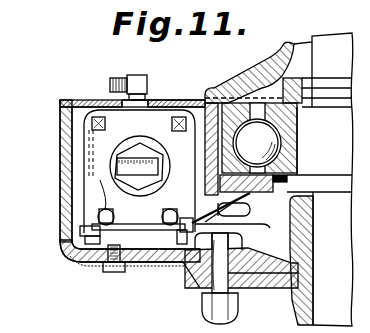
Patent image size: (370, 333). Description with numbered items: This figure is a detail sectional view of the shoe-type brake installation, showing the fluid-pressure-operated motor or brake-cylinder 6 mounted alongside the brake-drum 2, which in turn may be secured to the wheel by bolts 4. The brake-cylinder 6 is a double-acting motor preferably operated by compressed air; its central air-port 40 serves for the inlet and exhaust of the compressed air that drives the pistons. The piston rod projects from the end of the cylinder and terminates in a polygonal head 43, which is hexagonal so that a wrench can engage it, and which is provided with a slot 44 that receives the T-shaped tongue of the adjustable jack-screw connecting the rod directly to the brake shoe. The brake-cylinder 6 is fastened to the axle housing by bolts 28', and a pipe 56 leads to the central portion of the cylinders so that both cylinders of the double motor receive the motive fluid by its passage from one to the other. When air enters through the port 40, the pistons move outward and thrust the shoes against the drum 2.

The brake-drum 2 is at (60, 157).
The bolts 4 is at (202, 283).
The brake-cylinder 6 is at (100, 180).
The central air-port 40 is at (149, 97).
The polygonal head 43 is at (144, 147).
The slot 44 is at (153, 167).
The pipe 56 is at (228, 220).
The bolts 28' is at (123, 261).